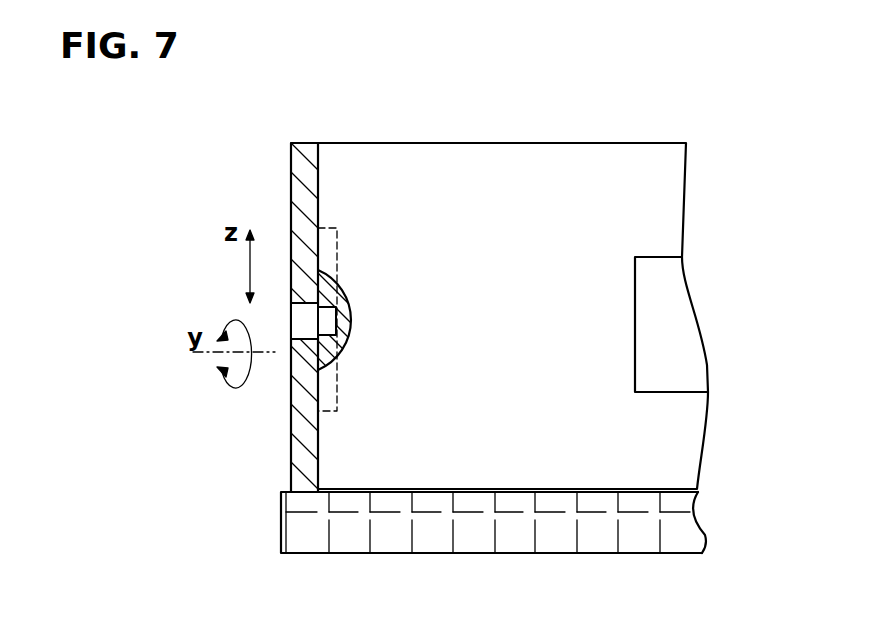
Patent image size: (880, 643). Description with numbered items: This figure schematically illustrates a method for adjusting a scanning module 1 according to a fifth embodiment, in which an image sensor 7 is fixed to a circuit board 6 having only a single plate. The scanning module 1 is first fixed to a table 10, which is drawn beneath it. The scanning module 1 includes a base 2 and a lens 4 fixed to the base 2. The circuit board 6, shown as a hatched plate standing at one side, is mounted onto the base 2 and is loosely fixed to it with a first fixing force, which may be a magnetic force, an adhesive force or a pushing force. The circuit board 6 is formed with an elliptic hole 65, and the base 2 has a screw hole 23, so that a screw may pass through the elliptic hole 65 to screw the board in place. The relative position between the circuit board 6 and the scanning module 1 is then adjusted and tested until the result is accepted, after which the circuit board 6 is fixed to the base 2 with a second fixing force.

The scanning module 1 is at (700, 423).
The base 2 is at (343, 342).
The lens 4 is at (657, 388).
The circuit board 6 is at (297, 206).
The image sensor 7 is at (338, 253).
The table 10 is at (433, 540).
The screw hole 23 is at (320, 318).
The elliptic hole 65 is at (297, 318).